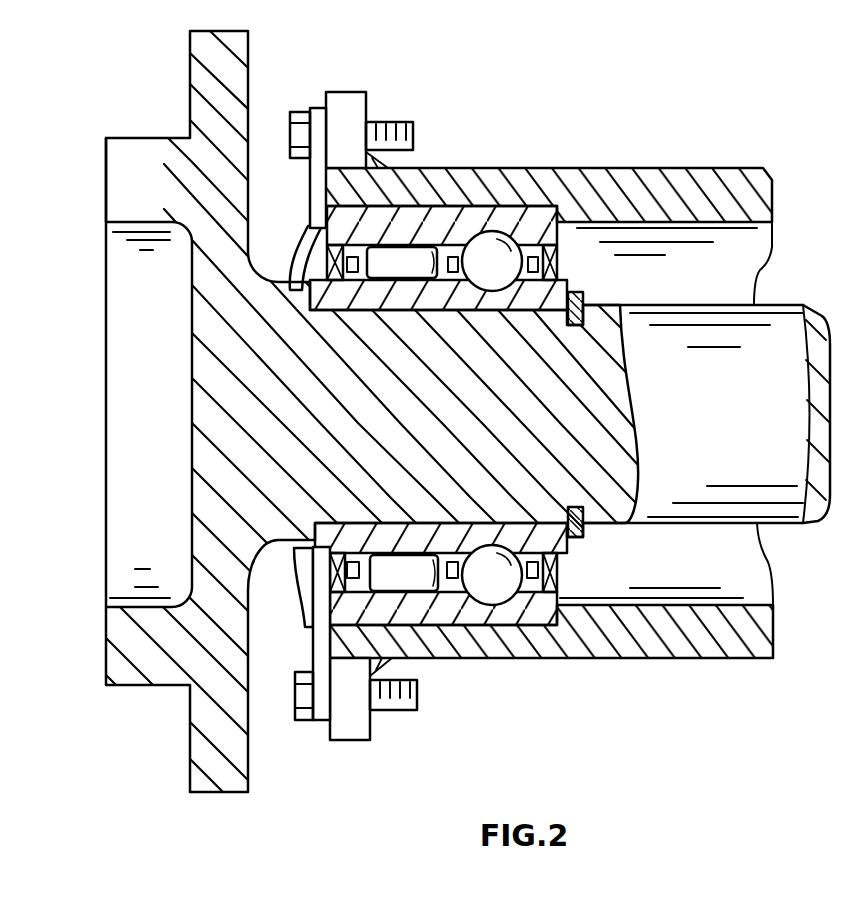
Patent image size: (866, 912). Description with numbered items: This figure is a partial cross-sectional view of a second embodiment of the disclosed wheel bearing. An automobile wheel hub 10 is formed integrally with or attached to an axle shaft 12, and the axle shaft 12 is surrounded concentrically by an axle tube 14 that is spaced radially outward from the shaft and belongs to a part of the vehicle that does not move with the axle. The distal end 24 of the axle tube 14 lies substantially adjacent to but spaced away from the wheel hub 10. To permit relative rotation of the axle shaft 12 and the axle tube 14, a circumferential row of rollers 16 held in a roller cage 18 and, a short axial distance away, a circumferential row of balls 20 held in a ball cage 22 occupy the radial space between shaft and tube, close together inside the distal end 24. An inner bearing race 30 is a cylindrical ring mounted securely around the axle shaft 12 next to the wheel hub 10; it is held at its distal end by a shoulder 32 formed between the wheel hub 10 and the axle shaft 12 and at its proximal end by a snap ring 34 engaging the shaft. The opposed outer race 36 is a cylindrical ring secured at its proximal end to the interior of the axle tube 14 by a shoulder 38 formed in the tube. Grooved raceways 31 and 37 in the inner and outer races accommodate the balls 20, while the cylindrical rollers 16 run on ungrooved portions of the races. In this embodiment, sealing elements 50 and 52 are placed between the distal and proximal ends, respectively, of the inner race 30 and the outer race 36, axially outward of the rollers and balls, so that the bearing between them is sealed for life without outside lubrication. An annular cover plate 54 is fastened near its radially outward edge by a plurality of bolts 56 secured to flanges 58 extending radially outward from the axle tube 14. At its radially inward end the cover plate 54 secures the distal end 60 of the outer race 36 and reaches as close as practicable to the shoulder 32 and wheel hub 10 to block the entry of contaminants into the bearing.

The wheel hub 10 is at (115, 188).
The axle shaft 12 is at (210, 468).
The axle tube 14 is at (725, 658).
The rollers 16 is at (408, 252).
The roller cage 18 is at (467, 240).
The balls 20 is at (540, 168).
The ball cage 22 is at (553, 172).
The distal end of the axle tube 24 is at (630, 190).
The inner bearing race 30 is at (423, 533).
The raceway 31 is at (467, 547).
The shoulder 32 is at (310, 310).
The snap ring 34 is at (583, 533).
The outer race 36 is at (455, 607).
The raceway 37 is at (497, 605).
The shoulder 38 is at (555, 607).
The sealing element 50 is at (343, 547).
The sealing element 52 is at (560, 577).
The annular cover plate 54 is at (313, 625).
The bolts 56 is at (395, 713).
The flanges 58 is at (342, 765).
The distal end of the outer bearing race 60 is at (327, 226).